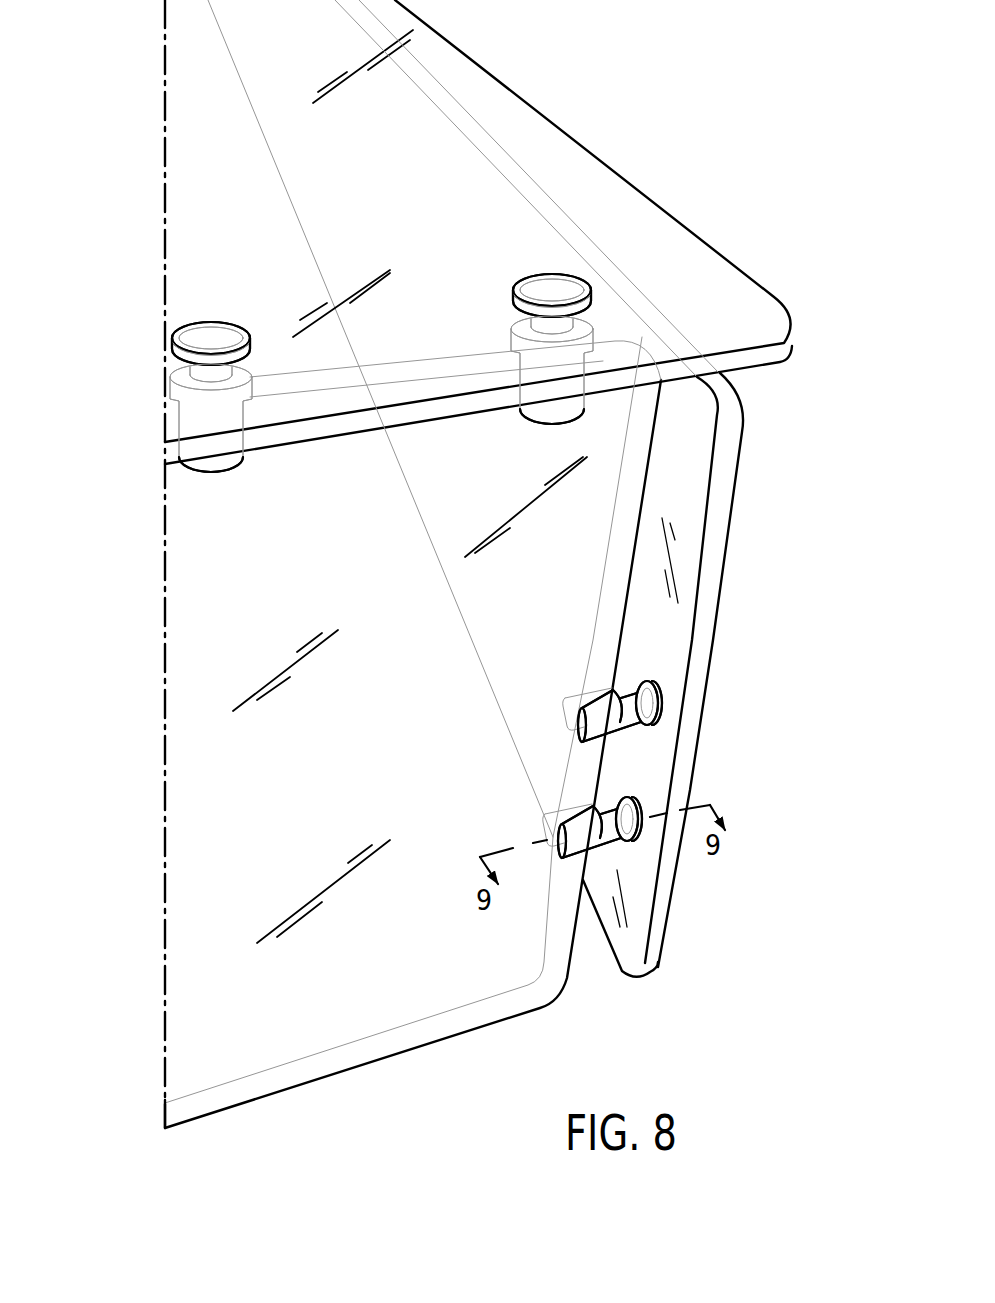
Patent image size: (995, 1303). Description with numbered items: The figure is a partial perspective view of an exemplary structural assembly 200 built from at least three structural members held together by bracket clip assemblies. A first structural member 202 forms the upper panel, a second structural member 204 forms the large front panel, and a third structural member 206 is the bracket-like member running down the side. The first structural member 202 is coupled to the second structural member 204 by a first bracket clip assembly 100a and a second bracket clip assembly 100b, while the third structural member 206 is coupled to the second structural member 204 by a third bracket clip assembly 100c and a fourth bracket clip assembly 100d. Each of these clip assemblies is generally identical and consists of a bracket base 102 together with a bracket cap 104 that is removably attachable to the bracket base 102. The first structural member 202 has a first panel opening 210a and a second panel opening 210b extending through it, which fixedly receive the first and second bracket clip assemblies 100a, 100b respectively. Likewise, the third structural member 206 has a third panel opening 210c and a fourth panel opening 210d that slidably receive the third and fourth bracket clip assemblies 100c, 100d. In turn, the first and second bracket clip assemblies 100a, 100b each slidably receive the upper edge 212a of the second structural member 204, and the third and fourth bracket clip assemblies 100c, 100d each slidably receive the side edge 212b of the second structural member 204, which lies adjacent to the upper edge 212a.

The structural assembly 200 is at (130, 113).
The first structural member 202 is at (200, 205).
The second structural member 204 is at (205, 812).
The third structural member 206 is at (538, 637).
The upper edge 212a is at (385, 363).
The side edge 212b is at (645, 495).
The first bracket clip assembly 100a is at (170, 353).
The second bracket clip assembly 100b is at (587, 307).
The third bracket clip assembly 100c is at (653, 683).
The fourth bracket clip assembly 100d is at (567, 830).
The bracket base 102 is at (200, 413).
The bracket cap 104 is at (193, 338).
The first panel opening 210a is at (237, 374).
The second panel opening 210b is at (522, 325).
The third panel opening 210c is at (654, 725).
The fourth panel opening 210d is at (607, 801).